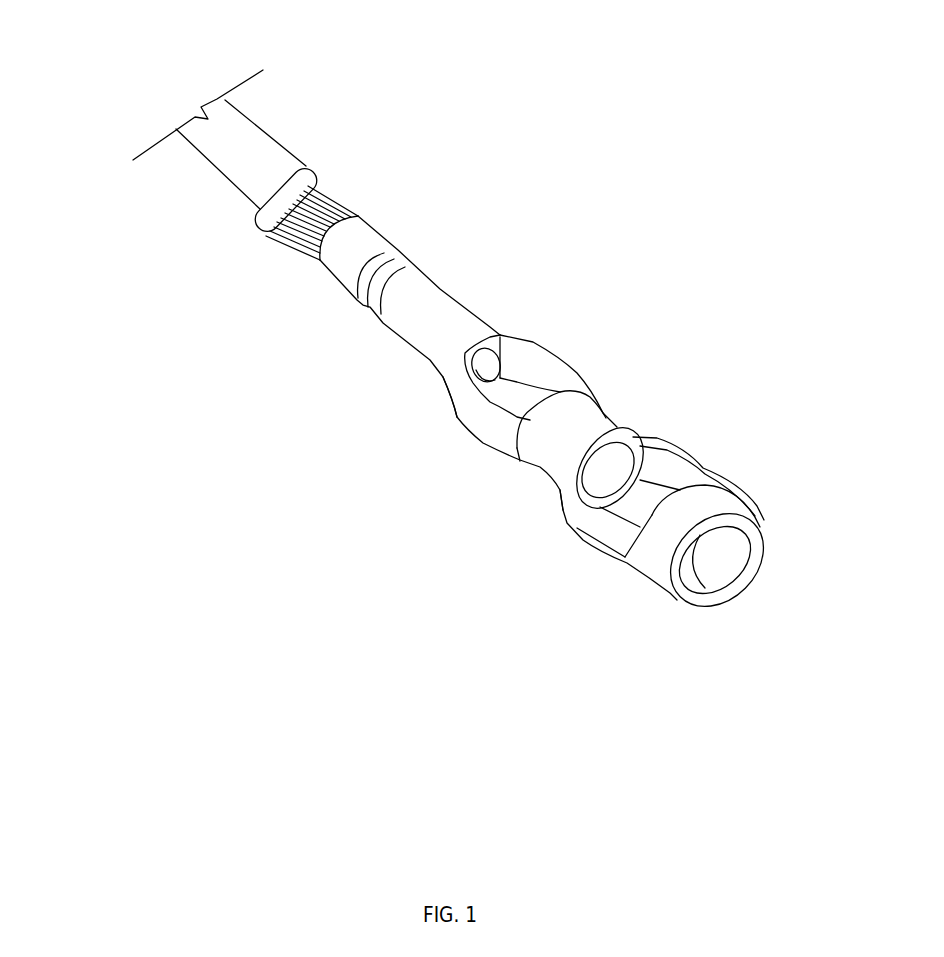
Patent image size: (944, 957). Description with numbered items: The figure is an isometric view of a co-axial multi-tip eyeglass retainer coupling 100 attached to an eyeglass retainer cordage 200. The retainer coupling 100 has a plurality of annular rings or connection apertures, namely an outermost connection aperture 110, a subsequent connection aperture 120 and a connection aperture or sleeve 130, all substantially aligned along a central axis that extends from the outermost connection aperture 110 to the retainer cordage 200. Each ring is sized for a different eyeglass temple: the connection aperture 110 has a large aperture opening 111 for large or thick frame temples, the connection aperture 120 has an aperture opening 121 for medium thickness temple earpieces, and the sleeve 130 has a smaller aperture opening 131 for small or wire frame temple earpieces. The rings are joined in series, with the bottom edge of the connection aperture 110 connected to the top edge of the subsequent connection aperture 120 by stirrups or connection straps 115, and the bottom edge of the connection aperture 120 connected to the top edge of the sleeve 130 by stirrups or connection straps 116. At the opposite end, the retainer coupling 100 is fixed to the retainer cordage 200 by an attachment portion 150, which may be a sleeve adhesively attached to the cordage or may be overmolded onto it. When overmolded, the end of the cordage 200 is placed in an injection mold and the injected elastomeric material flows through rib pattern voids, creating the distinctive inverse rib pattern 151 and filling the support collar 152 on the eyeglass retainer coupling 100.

The co-axial multi-tip eyeglass retainer coupling 100 is at (430, 212).
The outermost connection aperture 110 is at (677, 491).
The large aperture opening 111 is at (708, 563).
The connection straps 115 is at (578, 541).
The connection straps 116 is at (465, 414).
The subsequent connection aperture 120 is at (530, 394).
The aperture opening 121 is at (597, 465).
The sleeve 130 is at (444, 301).
The smaller aperture opening 131 is at (480, 363).
The attachment portion 150 is at (300, 177).
The inverse rib pattern 151 is at (335, 185).
The support collar 152 is at (243, 221).
The retainer cordage 200 is at (242, 139).